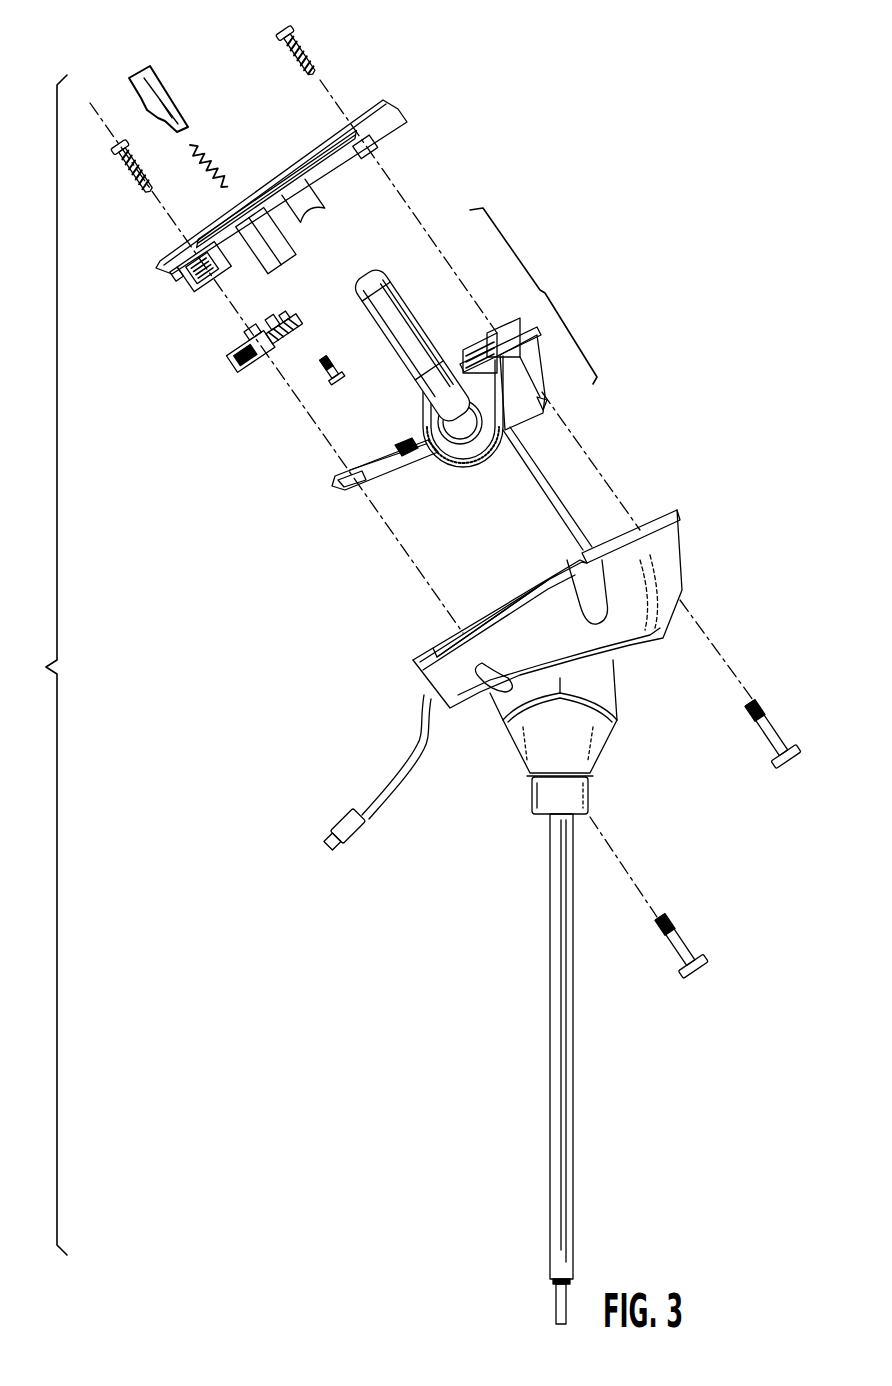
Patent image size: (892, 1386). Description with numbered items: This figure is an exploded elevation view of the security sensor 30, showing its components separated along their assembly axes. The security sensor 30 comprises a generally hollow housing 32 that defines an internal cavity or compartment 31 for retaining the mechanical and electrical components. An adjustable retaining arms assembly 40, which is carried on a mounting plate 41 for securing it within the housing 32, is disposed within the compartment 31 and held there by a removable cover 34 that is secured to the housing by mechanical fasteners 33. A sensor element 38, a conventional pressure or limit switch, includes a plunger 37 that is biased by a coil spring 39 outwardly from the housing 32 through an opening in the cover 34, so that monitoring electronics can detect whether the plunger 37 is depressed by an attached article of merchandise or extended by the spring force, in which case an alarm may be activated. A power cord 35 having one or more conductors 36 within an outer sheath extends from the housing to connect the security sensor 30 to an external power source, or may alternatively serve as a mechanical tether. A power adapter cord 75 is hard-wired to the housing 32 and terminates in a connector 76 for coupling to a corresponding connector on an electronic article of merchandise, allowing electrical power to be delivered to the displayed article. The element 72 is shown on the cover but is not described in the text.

The security sensor 30 is at (42, 665).
The compartment 31 is at (476, 607).
The housing 32 is at (657, 541).
The mechanical fasteners 33 is at (305, 40).
The cover 34 is at (398, 101).
The power cord 35 is at (553, 1053).
The conductors 36 is at (555, 1303).
The plunger 37 is at (165, 88).
The sensor element 38 is at (245, 352).
The coil spring 39 is at (212, 157).
The adjustable retaining arms assembly 40 is at (474, 379).
The mounting plate 41 is at (355, 458).
The rail 72 is at (295, 150).
The power adapter cord 75 is at (406, 780).
The connector 76 is at (357, 845).